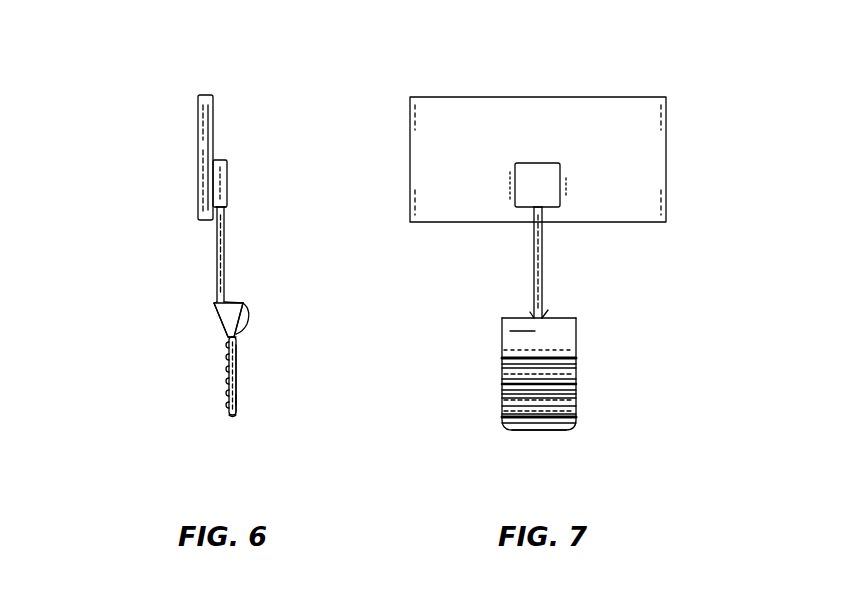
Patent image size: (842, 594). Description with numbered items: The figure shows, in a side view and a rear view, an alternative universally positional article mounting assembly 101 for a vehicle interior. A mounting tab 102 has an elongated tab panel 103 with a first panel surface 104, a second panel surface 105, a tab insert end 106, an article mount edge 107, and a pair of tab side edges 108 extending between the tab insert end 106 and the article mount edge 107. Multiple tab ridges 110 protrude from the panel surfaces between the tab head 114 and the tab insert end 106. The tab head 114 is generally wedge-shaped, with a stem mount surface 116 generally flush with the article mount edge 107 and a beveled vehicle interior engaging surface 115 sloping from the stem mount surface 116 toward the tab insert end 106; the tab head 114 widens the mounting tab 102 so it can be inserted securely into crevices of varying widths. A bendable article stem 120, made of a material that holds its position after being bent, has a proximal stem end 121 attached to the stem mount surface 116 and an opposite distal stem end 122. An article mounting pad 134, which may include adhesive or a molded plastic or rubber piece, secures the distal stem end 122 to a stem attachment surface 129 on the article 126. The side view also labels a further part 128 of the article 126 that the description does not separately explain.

In FIG. 6, the dashboard mounting article assembly 101 is at (142, 48).
In FIG. 7, the dashboard mounting article assembly 101 is at (498, 48).
In FIG. 6, the mounting tab 102 is at (260, 352).
In FIG. 7, the mounting tab 102 is at (603, 370).
In FIG. 6, the tab panel 103 is at (262, 342).
In FIG. 6, the first panel surface 104 is at (228, 370).
In FIG. 7, the first panel surface 104 is at (502, 370).
In FIG. 6, the second panel surface 105 is at (238, 378).
In FIG. 6, the tab insert end 106 is at (233, 416).
In FIG. 7, the tab insert end 106 is at (560, 430).
In FIG. 6, the article mount edge 107 is at (246, 305).
In FIG. 6, the tab side edges 108 is at (236, 400).
In FIG. 7, the tab side edges 108 is at (577, 392).
In FIG. 6, the tab ridges 110 is at (228, 400).
In FIG. 7, the tab ridges 110 is at (502, 395).
In FIG. 6, the tab head 114 is at (200, 327).
In FIG. 7, the tab head 114 is at (592, 330).
In FIG. 6, the vehicle interior engaging surface 115 is at (232, 335).
In FIG. 7, the vehicle interior engaging surface 115 is at (510, 331).
In FIG. 6, the stem mount surface 116 is at (213, 303).
In FIG. 7, the stem mount surface 116 is at (556, 318).
In FIG. 6, the article stem 120 is at (236, 243).
In FIG. 7, the article stem 120 is at (556, 270).
In FIG. 6, the proximal stem end 121 is at (224, 300).
In FIG. 7, the proximal stem end 121 is at (535, 318).
In FIG. 6, the distal stem end 122 is at (224, 212).
In FIG. 7, the distal stem end 122 is at (540, 207).
In FIG. 6, the article 126 is at (215, 90).
In FIG. 7, the article 126 is at (598, 85).
In FIG. 6, the panel back 128 is at (198, 138).
In FIG. 6, the stem attachment surface 129 is at (213, 115).
In FIG. 7, the stem attachment surface 129 is at (640, 158).
In FIG. 6, the article mounting pad 134 is at (227, 175).
In FIG. 7, the article mounting pad 134 is at (580, 130).